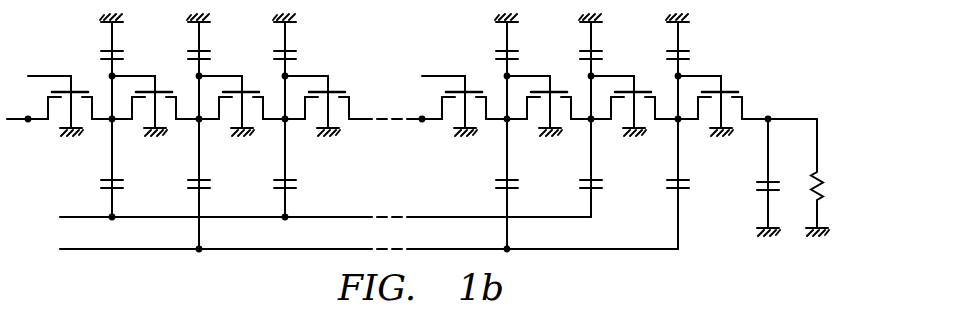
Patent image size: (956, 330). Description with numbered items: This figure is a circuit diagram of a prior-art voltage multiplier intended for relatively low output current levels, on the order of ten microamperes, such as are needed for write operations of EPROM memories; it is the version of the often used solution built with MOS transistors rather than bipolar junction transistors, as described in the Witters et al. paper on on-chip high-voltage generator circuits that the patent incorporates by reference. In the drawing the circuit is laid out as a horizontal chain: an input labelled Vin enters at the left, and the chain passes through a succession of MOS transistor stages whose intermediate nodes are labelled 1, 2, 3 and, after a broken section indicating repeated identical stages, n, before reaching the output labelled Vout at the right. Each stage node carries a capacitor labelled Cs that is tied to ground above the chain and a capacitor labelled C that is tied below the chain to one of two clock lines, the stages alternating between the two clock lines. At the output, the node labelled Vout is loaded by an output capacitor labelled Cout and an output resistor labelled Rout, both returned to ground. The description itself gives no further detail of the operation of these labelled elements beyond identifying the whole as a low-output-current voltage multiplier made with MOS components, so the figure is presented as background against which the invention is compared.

The input voltage Vin is at (34, 86).
The first stage node 1 is at (105, 98).
The second stage node 2 is at (192, 98).
The third stage node 3 is at (277, 98).
The nth stage node n is at (670, 98).
The storage capacitor Cs is at (386, 45).
The clock coupling capacitor C is at (387, 185).
The output voltage Vout is at (812, 119).
The output capacitor Cout is at (751, 177).
The output resistor Rout is at (834, 177).